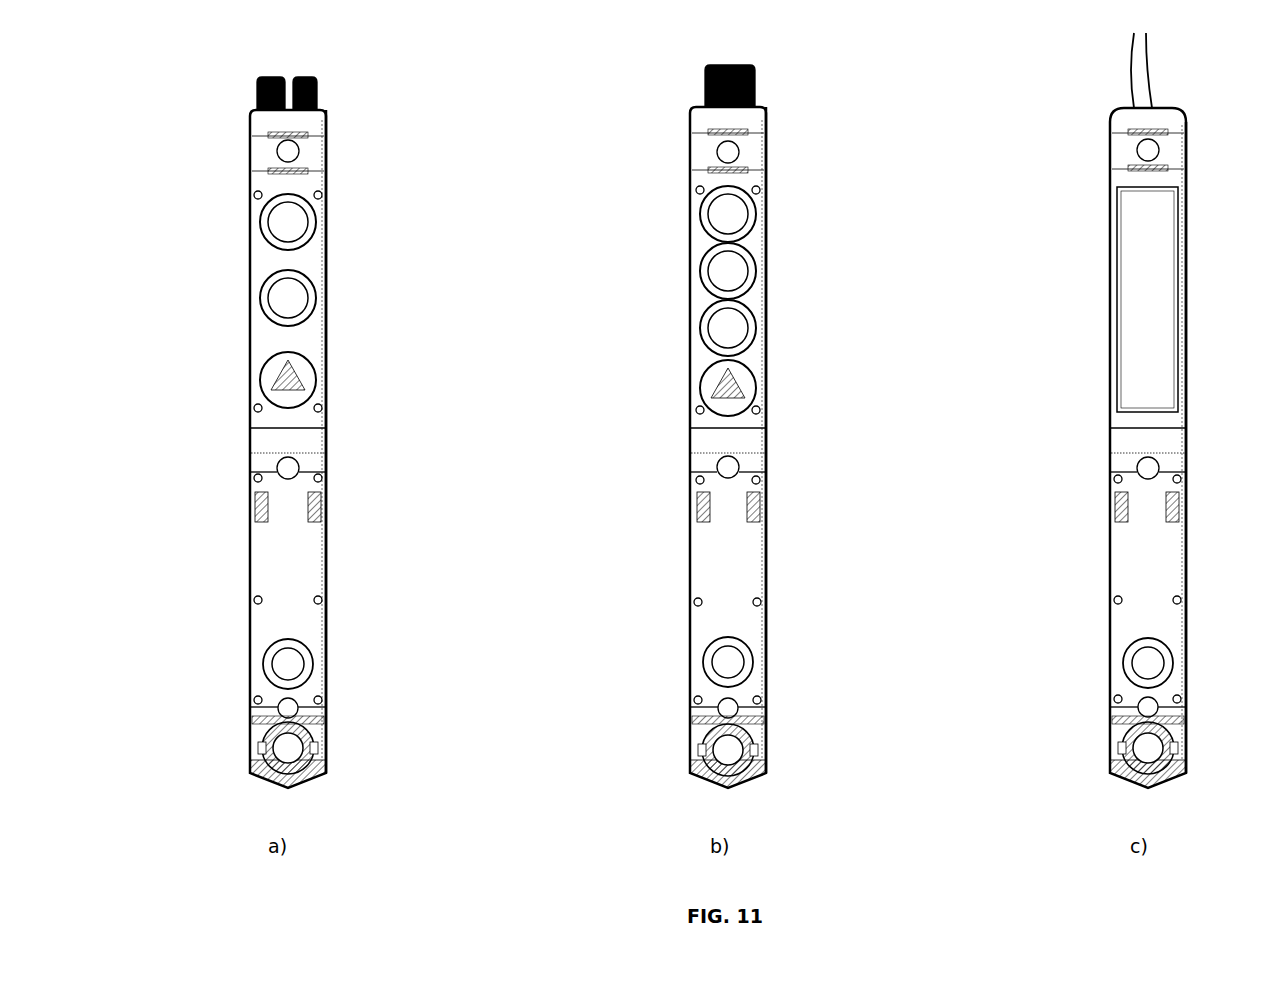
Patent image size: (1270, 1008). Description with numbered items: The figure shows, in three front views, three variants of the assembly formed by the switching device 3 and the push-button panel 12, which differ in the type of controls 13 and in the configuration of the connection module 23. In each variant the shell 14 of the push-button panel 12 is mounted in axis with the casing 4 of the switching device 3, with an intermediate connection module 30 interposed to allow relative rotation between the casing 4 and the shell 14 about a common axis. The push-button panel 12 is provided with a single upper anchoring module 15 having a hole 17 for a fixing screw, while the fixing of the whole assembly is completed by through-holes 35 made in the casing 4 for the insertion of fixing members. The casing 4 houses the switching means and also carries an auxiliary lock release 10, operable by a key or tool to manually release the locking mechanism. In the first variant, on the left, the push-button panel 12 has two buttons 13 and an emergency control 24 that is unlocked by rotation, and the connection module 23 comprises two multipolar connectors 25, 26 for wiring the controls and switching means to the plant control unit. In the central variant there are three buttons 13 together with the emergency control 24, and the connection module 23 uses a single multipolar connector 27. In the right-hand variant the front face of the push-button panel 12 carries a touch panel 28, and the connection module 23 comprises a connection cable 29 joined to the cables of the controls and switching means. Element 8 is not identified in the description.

The switching device 3 is at (230, 583).
The casing 4 is at (310, 575).
The connection socket 8 is at (272, 665).
The auxiliary lock release 10 is at (266, 747).
The push-button panel 12 is at (185, 300).
The controls 13 is at (280, 300).
The shell 14 is at (313, 266).
The upper anchoring module 15 is at (258, 152).
The hole 17 is at (299, 150).
The connection module 23 is at (258, 122).
The emergency control 24 is at (272, 379).
The multipolar connector 25 is at (268, 77).
The multipolar connector 26 is at (308, 77).
The multipolar connector 27 is at (733, 65).
The touch panel 28 is at (1147, 299).
The connection cable 29 is at (1150, 62).
The intermediate connection module 30 is at (266, 441).
The through-holes 35 is at (300, 466).